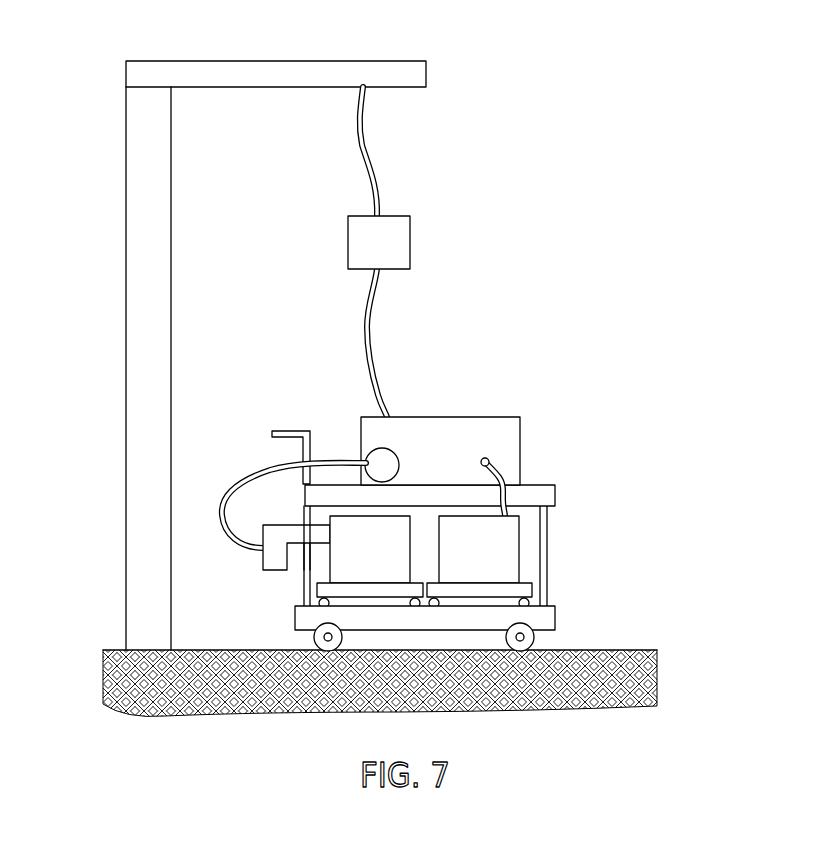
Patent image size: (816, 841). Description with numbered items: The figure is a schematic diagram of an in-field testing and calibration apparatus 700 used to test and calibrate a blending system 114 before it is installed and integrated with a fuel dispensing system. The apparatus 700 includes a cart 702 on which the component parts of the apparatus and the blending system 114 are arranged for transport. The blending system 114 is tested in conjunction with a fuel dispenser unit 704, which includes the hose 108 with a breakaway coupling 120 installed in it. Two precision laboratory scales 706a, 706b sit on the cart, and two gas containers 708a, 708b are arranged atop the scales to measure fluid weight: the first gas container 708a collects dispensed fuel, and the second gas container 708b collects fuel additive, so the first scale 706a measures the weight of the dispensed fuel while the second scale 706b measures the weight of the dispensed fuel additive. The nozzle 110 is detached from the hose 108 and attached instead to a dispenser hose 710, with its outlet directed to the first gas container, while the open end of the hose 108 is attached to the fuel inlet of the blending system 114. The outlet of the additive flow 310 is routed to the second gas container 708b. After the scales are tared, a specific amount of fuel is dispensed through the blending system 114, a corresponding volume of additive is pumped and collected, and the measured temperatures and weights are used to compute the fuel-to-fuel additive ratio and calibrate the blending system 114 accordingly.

The in-field testing and calibration apparatus 700 is at (362, 392).
The fuel dispenser unit 704 is at (122, 155).
The hose 108 is at (366, 324).
The breakaway coupling 120 is at (366, 254).
The blending system 114 is at (425, 463).
The additive flow 310 is at (490, 460).
The dispenser hose 710 is at (230, 476).
The nozzle 110 is at (262, 558).
The cart 702 is at (556, 491).
The gas container 708a is at (348, 559).
The gas container 708b is at (457, 559).
The precision laboratory scale 706a is at (317, 590).
The precision laboratory scale 706b is at (533, 590).